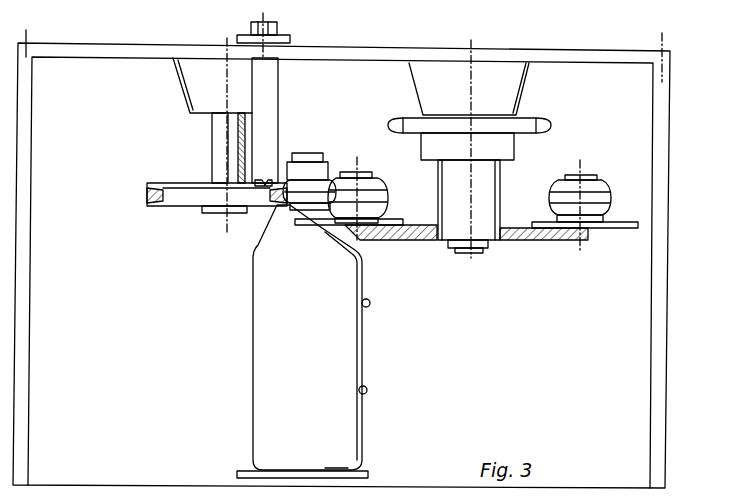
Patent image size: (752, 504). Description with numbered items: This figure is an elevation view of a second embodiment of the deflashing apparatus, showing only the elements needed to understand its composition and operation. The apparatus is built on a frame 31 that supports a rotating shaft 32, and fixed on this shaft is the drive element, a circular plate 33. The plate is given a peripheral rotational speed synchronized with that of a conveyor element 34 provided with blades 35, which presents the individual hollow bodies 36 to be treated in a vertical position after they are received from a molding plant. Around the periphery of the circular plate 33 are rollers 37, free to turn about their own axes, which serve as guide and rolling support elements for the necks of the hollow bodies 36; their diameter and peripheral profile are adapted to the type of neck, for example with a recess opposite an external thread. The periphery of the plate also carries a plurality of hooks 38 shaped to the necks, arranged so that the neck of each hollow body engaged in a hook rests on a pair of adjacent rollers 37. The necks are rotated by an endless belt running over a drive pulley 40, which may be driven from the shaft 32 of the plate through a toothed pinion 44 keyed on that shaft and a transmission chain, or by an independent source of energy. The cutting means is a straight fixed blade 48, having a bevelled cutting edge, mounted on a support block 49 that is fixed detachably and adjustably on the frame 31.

The frame 31 is at (661, 148).
The rotating shaft 32 is at (472, 253).
The circular plate 33 is at (513, 232).
The conveyor element 34 is at (367, 477).
The blades 35 is at (367, 392).
The hollow bodies 36 is at (320, 342).
The rollers 37 is at (368, 188).
The hooks 38 is at (378, 230).
The drive pulley 40 is at (168, 207).
The toothed pinion 44 is at (513, 125).
The fixed blade 48 is at (273, 178).
The support block 49 is at (262, 103).